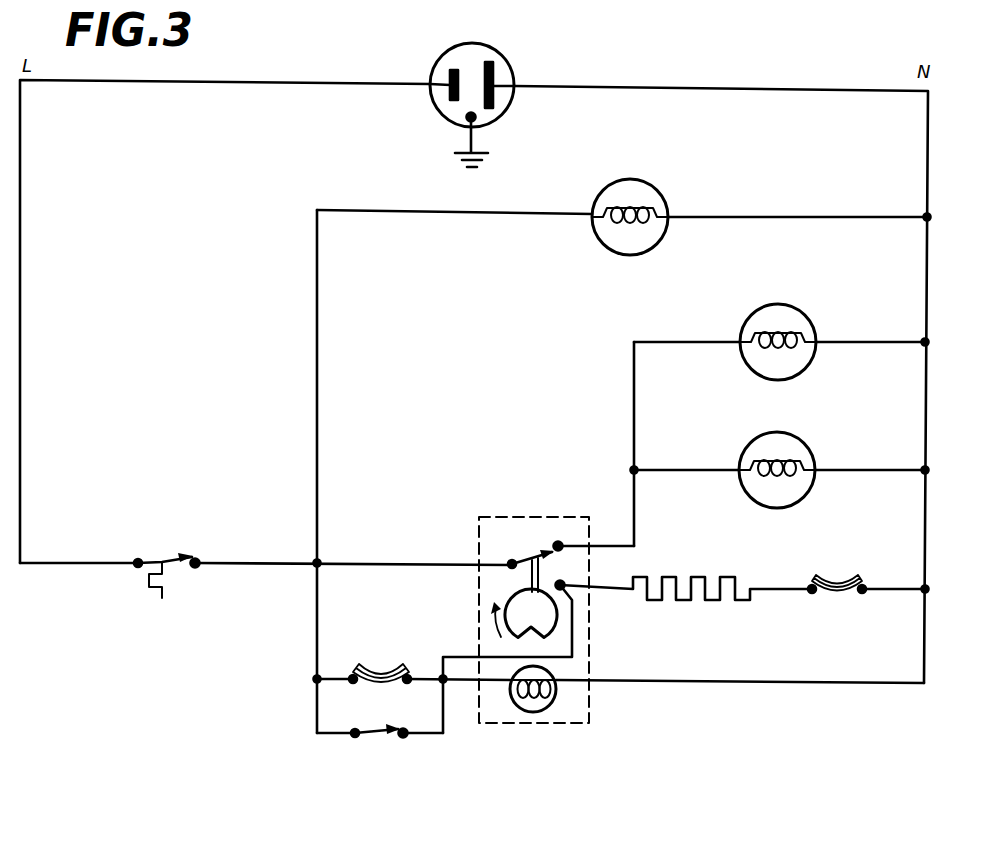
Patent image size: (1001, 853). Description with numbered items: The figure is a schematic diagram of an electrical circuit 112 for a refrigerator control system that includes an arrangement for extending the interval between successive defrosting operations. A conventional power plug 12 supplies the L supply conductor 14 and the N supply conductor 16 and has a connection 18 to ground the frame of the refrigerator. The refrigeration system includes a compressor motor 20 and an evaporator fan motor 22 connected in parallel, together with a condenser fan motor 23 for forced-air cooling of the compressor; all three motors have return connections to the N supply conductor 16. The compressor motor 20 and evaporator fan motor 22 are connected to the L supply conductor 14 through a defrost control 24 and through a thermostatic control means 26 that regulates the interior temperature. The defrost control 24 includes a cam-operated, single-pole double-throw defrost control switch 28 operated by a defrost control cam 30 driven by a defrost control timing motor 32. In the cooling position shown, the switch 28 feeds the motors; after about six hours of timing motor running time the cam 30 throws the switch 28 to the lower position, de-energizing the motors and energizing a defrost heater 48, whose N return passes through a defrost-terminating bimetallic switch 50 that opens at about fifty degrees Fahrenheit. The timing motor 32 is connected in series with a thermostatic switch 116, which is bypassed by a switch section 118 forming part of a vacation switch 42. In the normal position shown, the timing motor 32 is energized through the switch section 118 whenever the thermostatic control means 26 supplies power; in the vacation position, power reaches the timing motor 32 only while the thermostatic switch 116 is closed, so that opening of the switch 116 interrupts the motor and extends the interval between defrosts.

The power plug 12 is at (510, 67).
The L supply conductor 14 is at (20, 158).
The N supply conductor 16 is at (928, 123).
The ground connection 18 is at (471, 138).
The compressor motor 20 is at (810, 318).
The evaporator fan motor 22 is at (810, 448).
The condenser fan motor 23 is at (668, 200).
The defrost control 24 is at (479, 520).
The thermostatic control means 26 is at (168, 530).
The defrost control switch 28 is at (525, 545).
The defrost control cam 30 is at (513, 596).
The defrost control timing motor 32 is at (555, 705).
The vacation switch 42 is at (366, 765).
The defrost heater 48 is at (678, 601).
The defrost-terminating bimetallic switch 50 is at (840, 582).
The electrical circuit 112 is at (92, 641).
The thermostatic switch 116 is at (380, 670).
The switch section 118 is at (372, 736).